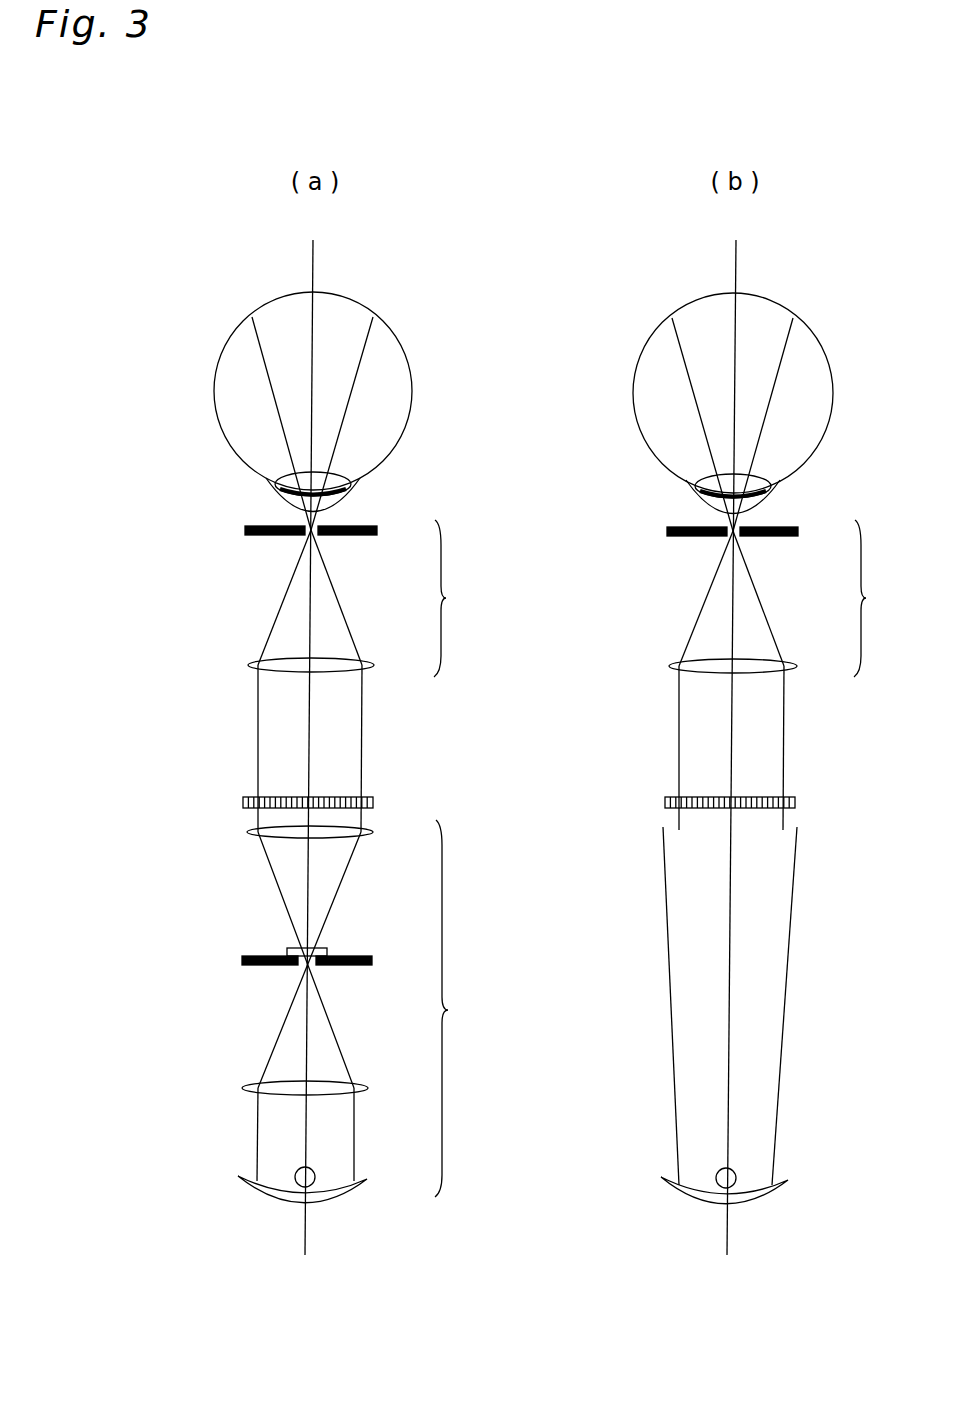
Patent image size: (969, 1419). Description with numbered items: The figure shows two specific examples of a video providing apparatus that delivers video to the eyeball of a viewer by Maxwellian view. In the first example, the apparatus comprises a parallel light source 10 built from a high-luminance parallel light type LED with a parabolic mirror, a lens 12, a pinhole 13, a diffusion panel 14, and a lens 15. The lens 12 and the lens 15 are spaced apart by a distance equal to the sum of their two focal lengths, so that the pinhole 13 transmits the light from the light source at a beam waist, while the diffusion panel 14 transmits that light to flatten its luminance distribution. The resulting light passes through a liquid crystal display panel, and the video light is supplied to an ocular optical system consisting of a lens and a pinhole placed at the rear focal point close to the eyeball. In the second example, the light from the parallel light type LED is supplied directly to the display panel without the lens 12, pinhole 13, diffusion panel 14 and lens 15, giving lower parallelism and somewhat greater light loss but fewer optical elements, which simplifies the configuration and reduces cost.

The parallel light source 10 is at (457, 1008).
The lens 12 is at (368, 1088).
The pinhole 13 is at (372, 960).
The diffusion panel 14 is at (327, 949).
The lens 15 is at (373, 832).